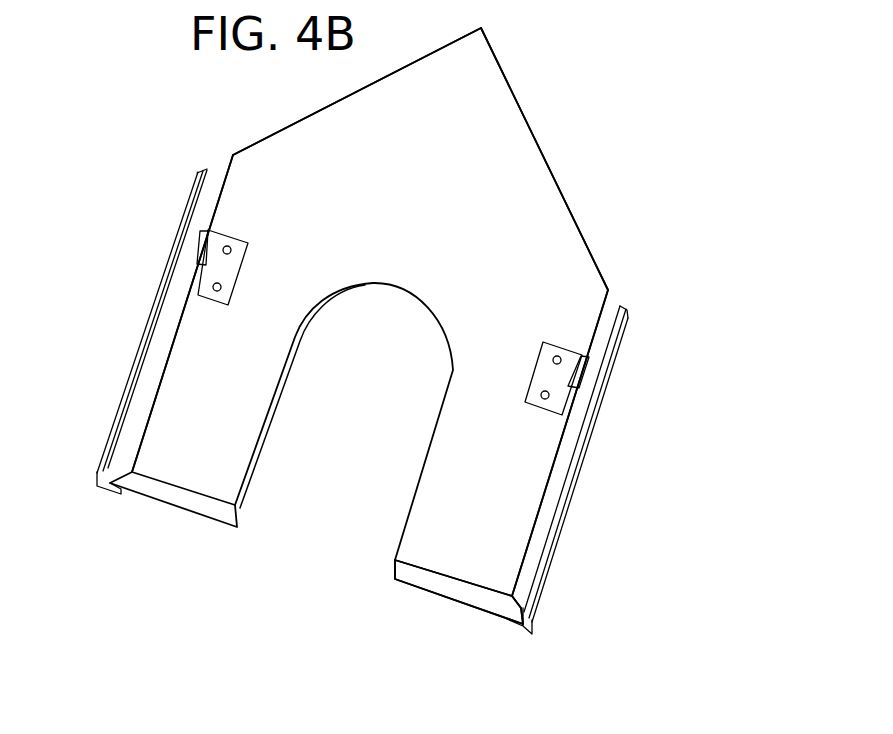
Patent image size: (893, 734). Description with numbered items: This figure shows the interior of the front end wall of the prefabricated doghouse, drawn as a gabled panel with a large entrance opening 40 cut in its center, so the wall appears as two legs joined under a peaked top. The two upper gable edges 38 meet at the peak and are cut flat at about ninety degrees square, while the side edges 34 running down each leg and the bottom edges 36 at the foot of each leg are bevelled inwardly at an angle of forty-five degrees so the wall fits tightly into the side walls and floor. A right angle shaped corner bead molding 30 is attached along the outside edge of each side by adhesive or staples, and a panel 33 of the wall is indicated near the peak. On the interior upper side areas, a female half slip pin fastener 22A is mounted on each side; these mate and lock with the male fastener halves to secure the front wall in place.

The female half slip pin fastener 22A is at (203, 247).
The right angle shaped corner bead molding 30 is at (137, 359).
The panel 33 is at (573, 240).
The side edges 34 is at (143, 417).
The bottom edges 36 is at (453, 595).
The gable edges 38 is at (535, 130).
The entrance opening 40 is at (314, 524).